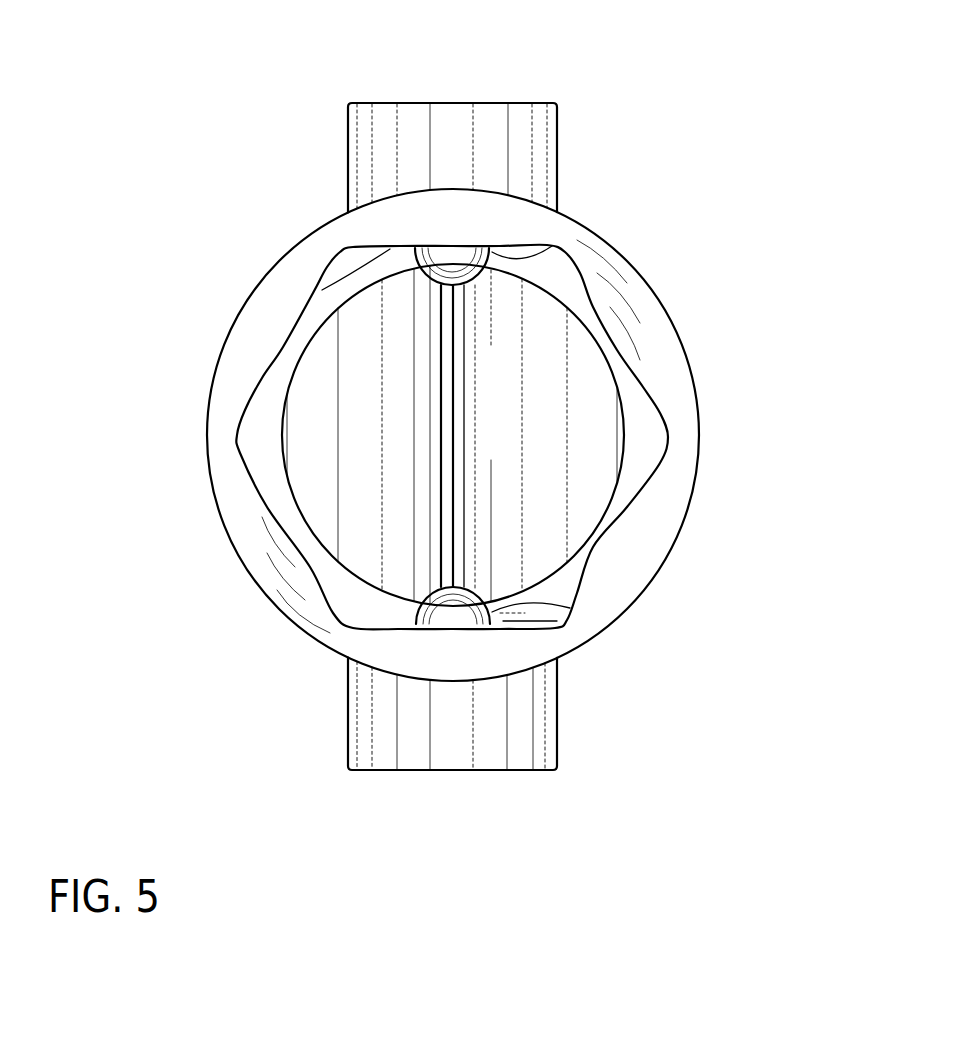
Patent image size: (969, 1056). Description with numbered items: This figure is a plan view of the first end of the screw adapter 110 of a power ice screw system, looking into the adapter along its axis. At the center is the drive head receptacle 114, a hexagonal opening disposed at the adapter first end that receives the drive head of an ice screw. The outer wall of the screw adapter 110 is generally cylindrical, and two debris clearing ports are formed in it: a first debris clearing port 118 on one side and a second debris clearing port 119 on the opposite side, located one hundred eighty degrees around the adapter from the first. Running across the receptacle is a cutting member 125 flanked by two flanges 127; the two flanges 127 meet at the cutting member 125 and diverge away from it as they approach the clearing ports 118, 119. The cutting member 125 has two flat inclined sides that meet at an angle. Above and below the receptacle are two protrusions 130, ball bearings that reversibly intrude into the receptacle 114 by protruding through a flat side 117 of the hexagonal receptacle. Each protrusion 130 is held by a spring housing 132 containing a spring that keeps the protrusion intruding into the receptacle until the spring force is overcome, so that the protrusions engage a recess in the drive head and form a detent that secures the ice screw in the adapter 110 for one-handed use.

The screw adapter 110 is at (193, 76).
The spring housing 132 is at (523, 103).
The first debris clearing port 118 is at (193, 433).
The second debris clearing port 119 is at (713, 433).
The flat side 117 is at (340, 291).
The drive head receptacle 114 is at (313, 490).
The protrusion 130 is at (545, 258).
The cutting member 125 is at (452, 327).
The flange 127 is at (395, 447).